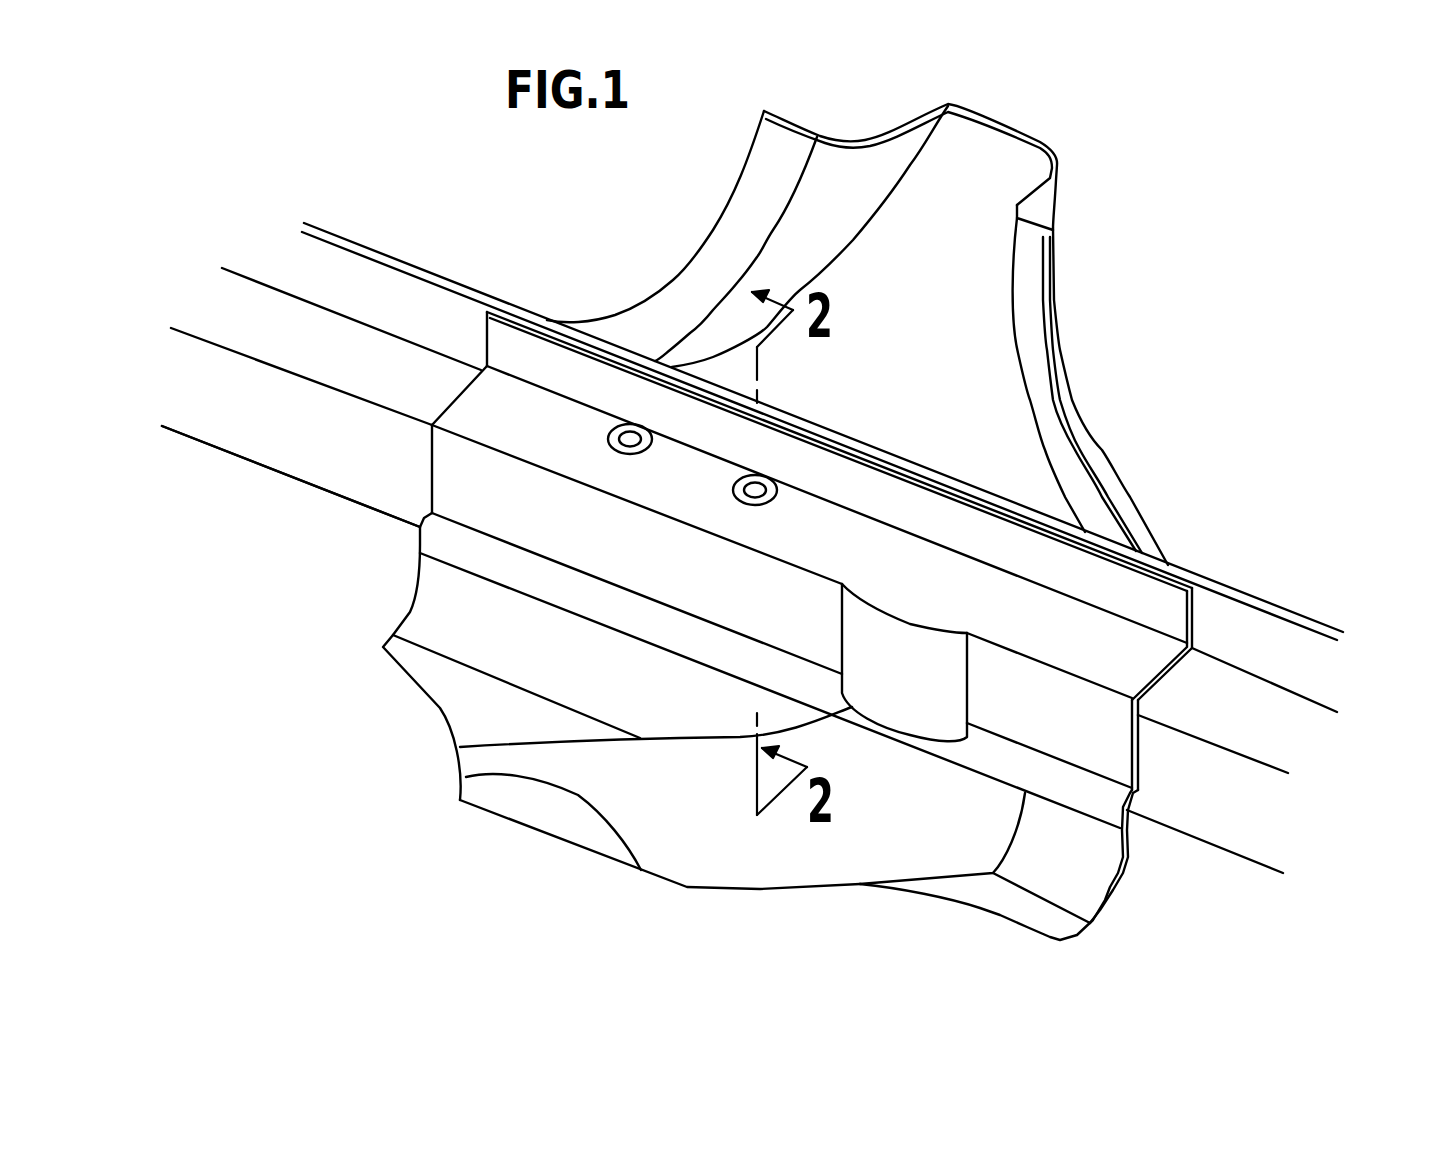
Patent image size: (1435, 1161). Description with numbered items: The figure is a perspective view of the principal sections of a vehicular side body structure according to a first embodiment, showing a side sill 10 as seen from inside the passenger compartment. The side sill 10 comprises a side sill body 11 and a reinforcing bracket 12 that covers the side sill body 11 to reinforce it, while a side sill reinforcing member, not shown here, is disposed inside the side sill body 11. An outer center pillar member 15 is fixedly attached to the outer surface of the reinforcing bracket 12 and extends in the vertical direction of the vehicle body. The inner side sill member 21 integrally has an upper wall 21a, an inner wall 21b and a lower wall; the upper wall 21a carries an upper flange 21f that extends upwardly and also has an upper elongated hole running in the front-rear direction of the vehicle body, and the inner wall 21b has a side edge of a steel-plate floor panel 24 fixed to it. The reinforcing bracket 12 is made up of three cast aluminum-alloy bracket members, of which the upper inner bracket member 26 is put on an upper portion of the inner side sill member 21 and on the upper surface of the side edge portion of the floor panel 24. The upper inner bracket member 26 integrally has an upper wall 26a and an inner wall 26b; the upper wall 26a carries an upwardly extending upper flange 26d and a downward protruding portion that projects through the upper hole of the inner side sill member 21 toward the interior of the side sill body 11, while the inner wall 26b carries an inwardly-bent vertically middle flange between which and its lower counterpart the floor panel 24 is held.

The side sill 10 is at (415, 493).
The side sill body 11 is at (287, 478).
The reinforcing bracket 12 is at (450, 396).
The outer center pillar member 15 is at (1030, 273).
The inner side sill member 21 is at (258, 320).
The upper wall 21a is at (263, 343).
The inner wall 21b is at (200, 425).
The upper flange 21f is at (365, 273).
The floor panel 24 is at (537, 810).
The upper inner bracket member 26 is at (1142, 757).
The upper wall 26a is at (1143, 660).
The inner wall 26b is at (1137, 722).
The upper flange 26d is at (1153, 592).